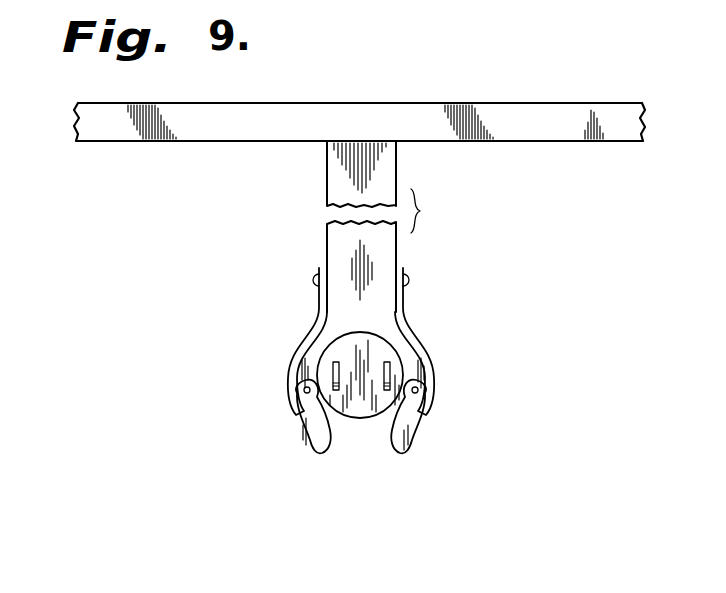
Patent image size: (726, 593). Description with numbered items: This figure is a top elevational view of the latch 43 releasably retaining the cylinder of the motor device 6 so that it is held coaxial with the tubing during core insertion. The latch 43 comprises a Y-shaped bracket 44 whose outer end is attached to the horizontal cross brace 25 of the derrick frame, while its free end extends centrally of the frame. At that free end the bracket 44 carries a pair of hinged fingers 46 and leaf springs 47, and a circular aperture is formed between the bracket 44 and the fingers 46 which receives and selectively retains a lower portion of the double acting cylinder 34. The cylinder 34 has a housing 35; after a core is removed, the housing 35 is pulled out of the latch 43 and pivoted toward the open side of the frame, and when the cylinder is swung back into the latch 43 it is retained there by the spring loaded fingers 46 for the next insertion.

The horizontal brace 25 is at (553, 143).
The Y-shaped bracket 44 is at (327, 242).
The motor device 6 is at (405, 350).
The latch 43 is at (437, 386).
The double acting cylinder 34 is at (332, 347).
The cylinder housing 35 is at (372, 345).
The leaf springs 47 is at (287, 383).
The hinged fingers 46 is at (309, 438).